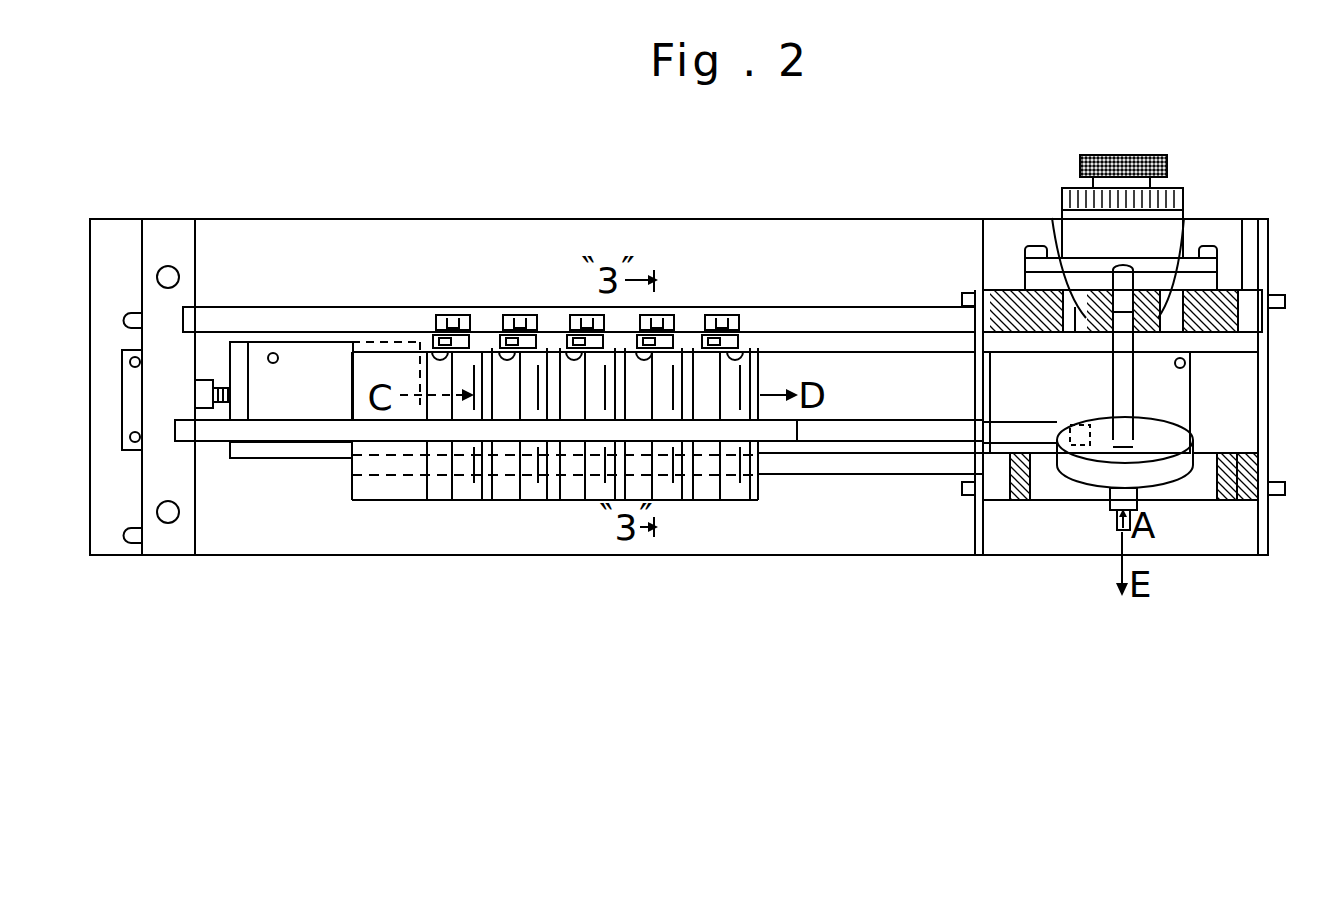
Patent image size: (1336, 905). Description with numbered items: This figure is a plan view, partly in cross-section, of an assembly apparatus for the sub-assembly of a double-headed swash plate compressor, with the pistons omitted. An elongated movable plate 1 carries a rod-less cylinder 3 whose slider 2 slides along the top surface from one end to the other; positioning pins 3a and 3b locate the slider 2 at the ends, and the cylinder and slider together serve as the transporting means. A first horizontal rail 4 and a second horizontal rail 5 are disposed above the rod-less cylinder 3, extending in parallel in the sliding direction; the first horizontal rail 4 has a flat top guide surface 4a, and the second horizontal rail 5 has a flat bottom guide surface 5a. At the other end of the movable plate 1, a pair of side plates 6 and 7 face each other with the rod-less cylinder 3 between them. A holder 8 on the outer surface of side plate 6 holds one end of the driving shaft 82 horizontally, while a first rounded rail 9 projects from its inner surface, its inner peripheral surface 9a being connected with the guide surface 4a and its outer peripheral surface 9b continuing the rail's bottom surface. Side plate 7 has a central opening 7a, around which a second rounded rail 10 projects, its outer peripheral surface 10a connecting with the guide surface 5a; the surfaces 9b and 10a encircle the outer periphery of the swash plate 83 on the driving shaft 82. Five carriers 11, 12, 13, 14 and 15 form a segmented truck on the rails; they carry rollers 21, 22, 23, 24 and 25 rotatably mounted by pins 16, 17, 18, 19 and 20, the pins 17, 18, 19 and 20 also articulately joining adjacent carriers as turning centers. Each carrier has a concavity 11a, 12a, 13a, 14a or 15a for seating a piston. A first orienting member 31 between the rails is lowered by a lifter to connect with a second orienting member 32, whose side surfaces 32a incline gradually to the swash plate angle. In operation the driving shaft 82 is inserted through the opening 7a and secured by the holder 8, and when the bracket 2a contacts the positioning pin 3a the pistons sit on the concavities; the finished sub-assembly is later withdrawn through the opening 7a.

The movable plate 1 is at (318, 232).
The slider 2 is at (305, 358).
The bracket 2a is at (245, 355).
The rod-less cylinder 3 is at (128, 410).
The positioning pin 3a is at (205, 385).
The positioning pin 3b is at (1100, 397).
The first horizontal rail 4 is at (375, 322).
The guide surface 4a is at (848, 328).
The second horizontal rail 5 is at (297, 463).
The guide surface 5a is at (850, 465).
The side plate 6 is at (1245, 300).
The side plate 7 is at (1245, 500).
The opening 7a is at (1205, 500).
The holder 8 is at (1125, 177).
The first rounded rail 9 is at (1222, 332).
The inner peripheral surface 9a is at (1062, 300).
The outer peripheral surface 9b is at (1000, 300).
The second rounded rail 10 is at (1270, 497).
The outer peripheral surface 10a is at (1000, 497).
The carrier 11 is at (710, 500).
The concavity 11a is at (752, 500).
The carrier 12 is at (600, 492).
The concavity 12a is at (670, 497).
The carrier 13 is at (530, 492).
The concavity 13a is at (573, 497).
The carrier 14 is at (470, 492).
The concavity 14a is at (508, 497).
The carrier 15 is at (400, 497).
The concavity 15a is at (440, 497).
The pin 16 is at (735, 356).
The pin 17 is at (660, 356).
The pin 18 is at (576, 356).
The pin 19 is at (510, 356).
The pin 20 is at (447, 356).
The roller 21 is at (732, 312).
The roller 22 is at (662, 312).
The roller 23 is at (585, 312).
The roller 24 is at (517, 312).
The roller 25 is at (452, 312).
The first orienting member 31 is at (215, 430).
The second orienting member 32 is at (910, 430).
The side surfaces 32a is at (1075, 430).
The driving shaft 82 is at (1118, 505).
The swash plate 83 is at (1175, 440).